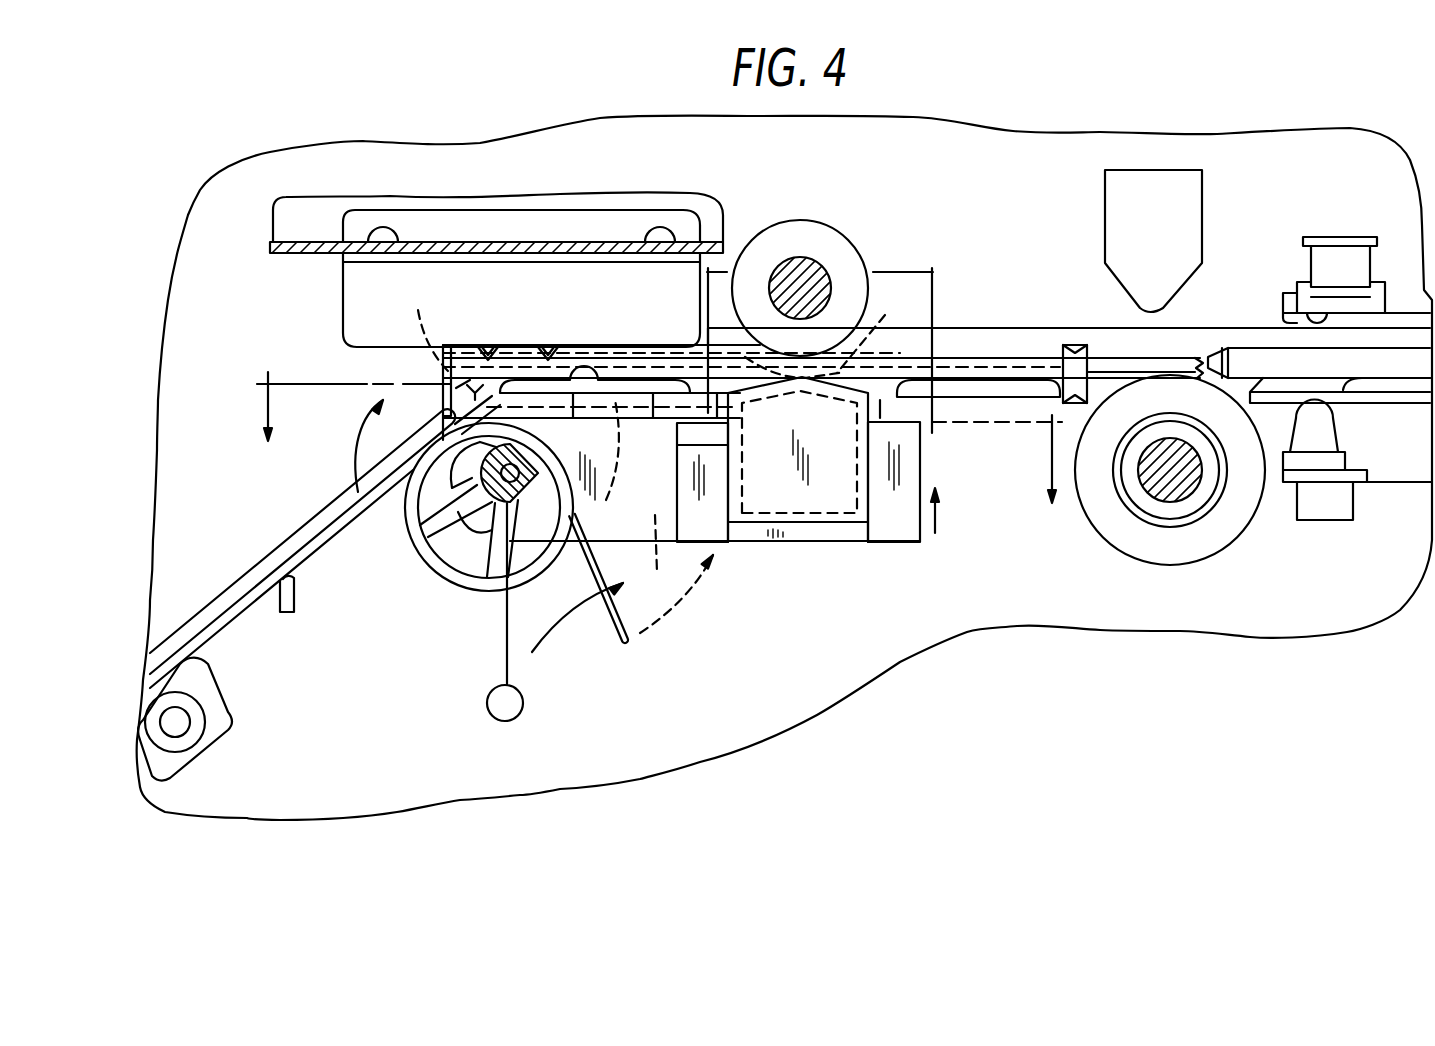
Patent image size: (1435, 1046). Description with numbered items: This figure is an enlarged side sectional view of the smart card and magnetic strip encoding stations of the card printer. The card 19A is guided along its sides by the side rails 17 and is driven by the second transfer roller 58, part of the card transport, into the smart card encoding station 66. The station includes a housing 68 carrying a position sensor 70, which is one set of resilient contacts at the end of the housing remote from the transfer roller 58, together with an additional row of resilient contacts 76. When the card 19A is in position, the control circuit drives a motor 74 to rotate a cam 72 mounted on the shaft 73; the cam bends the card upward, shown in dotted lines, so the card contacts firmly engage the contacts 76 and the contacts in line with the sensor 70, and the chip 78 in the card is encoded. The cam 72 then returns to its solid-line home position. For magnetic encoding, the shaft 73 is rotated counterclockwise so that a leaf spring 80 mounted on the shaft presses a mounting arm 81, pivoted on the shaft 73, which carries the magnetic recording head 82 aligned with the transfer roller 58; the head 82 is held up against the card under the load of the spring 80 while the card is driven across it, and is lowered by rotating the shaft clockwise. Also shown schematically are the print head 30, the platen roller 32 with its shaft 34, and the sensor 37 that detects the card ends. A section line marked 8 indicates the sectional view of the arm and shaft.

The section line 8- 8 is at (658, 407).
The side rails 17 is at (957, 338).
The card 19A is at (590, 343).
The print head member 30 is at (1193, 222).
The platen 32 is at (1200, 540).
The shaft 34 is at (1152, 485).
The sensor 37 is at (1342, 255).
The second transfer roller 58 is at (808, 233).
The smart card encoding station 66 is at (647, 200).
The housing 68 is at (357, 292).
The position sensor 70 is at (507, 347).
The cam 72 is at (422, 607).
The shaft 73 is at (494, 490).
The motor 74 is at (487, 697).
The resilient contacts 76 is at (537, 347).
The chip 78 is at (635, 486).
The leaf spring 80 is at (617, 630).
The mounting arm 81 is at (637, 508).
The magnetic recording head 82 is at (870, 567).